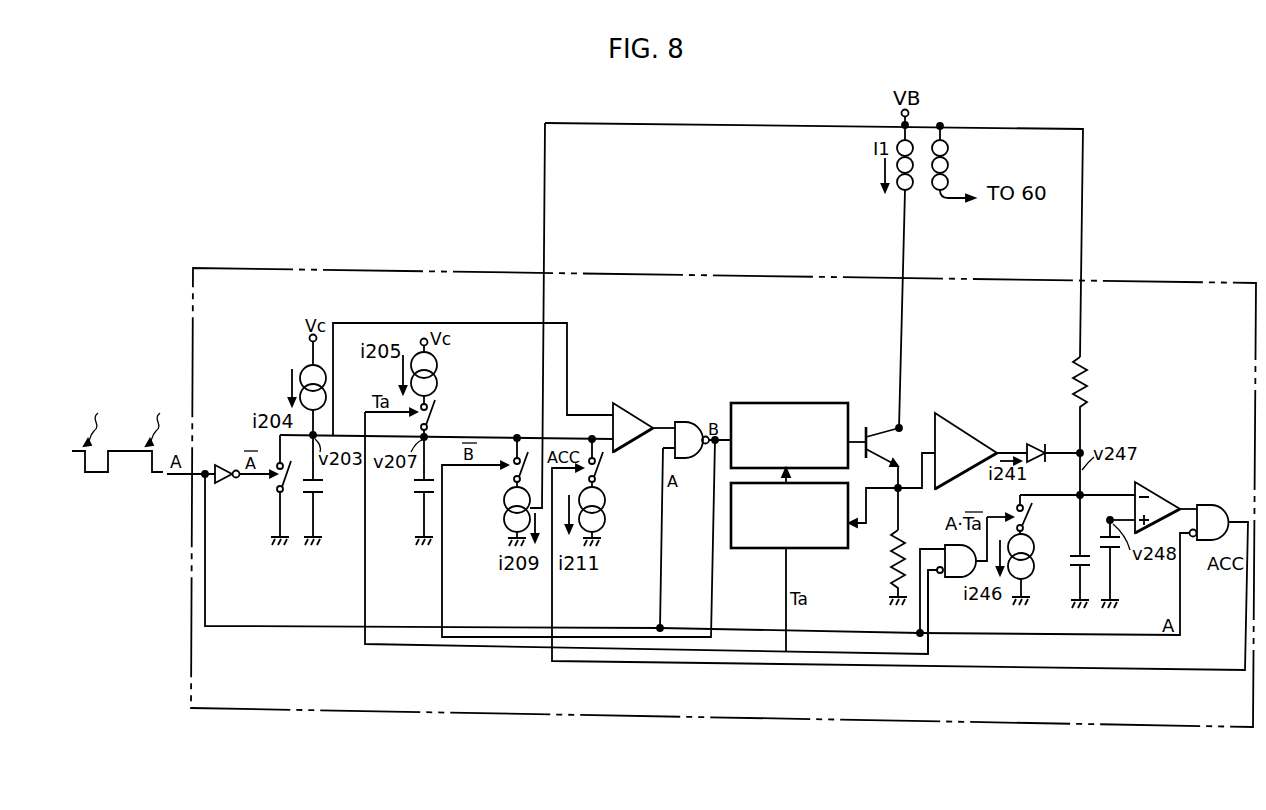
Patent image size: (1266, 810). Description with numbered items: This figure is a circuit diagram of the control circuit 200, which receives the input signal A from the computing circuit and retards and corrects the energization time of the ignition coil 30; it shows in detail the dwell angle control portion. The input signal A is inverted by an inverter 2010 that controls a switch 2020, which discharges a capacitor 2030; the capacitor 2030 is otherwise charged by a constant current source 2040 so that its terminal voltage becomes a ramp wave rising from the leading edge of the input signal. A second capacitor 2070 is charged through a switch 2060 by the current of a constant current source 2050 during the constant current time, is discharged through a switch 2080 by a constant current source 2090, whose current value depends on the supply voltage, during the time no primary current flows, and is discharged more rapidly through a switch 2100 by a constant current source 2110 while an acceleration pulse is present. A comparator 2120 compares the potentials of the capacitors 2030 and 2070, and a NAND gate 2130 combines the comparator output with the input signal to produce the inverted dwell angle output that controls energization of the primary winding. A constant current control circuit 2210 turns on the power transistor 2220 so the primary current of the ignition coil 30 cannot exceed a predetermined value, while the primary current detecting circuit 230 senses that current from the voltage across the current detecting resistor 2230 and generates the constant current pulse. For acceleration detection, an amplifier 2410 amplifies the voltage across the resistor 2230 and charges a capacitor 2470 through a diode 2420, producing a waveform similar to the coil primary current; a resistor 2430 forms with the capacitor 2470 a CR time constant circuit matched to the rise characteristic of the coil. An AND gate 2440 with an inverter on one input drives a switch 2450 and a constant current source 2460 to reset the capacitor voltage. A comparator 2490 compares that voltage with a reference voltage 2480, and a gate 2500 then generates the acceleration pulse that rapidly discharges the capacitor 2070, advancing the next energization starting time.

The control circuit 200 is at (904, 722).
The inverter 2010 is at (229, 482).
The switch 2020 is at (279, 497).
The capacitor 2030 is at (321, 495).
The constant current source 2040 is at (302, 368).
The constant current source 2050 is at (437, 374).
The switch 2060 is at (436, 414).
The capacitor 2070 is at (419, 497).
The switch 2080 is at (513, 476).
The constant current source 2090 is at (506, 513).
The switch 2100 is at (601, 481).
The constant current source 2110 is at (606, 516).
The comparator 2120 is at (633, 404).
The NAND gate 2130 is at (697, 420).
The constant current control circuit 2210 is at (788, 403).
The primary current detecting circuit 230 is at (757, 549).
The power transistor 2220 is at (879, 430).
The current detecting resistor 2230 is at (892, 563).
The ignition coil 30 is at (936, 277).
The amplifier 2410 is at (966, 430).
The diode 2420 is at (1036, 444).
The resistor 2430 is at (1088, 382).
The AND gate 2440 is at (950, 580).
The switch 2450 is at (1016, 505).
The constant current source 2460 is at (1033, 572).
The capacitor 2470 is at (1083, 578).
The reference voltage 2480 is at (1119, 550).
The comparator 2490 is at (1165, 491).
The gate 2500 is at (1213, 503).